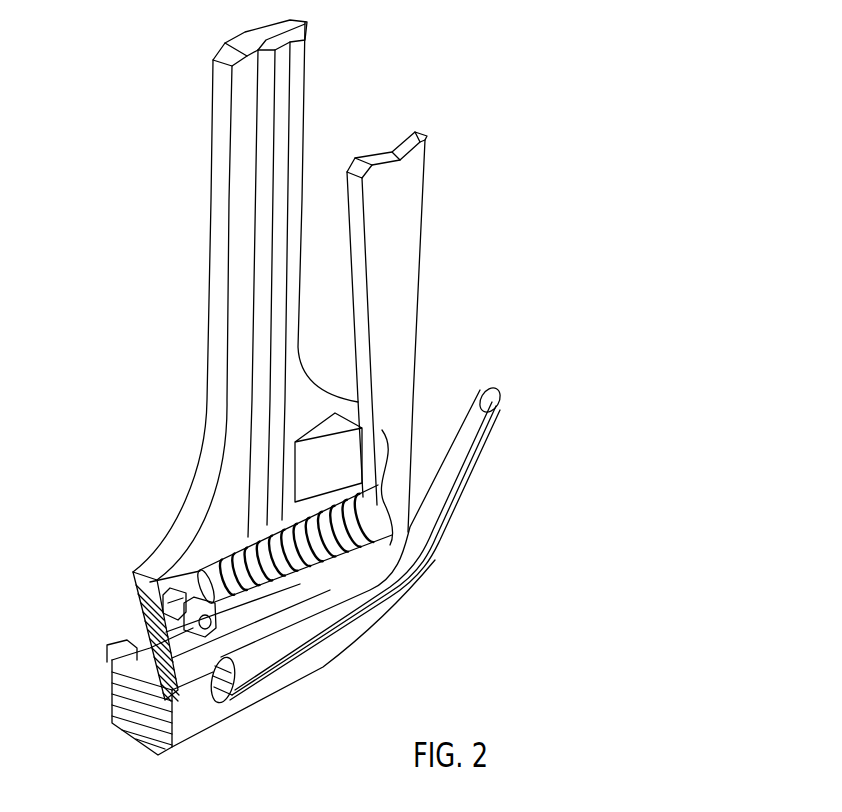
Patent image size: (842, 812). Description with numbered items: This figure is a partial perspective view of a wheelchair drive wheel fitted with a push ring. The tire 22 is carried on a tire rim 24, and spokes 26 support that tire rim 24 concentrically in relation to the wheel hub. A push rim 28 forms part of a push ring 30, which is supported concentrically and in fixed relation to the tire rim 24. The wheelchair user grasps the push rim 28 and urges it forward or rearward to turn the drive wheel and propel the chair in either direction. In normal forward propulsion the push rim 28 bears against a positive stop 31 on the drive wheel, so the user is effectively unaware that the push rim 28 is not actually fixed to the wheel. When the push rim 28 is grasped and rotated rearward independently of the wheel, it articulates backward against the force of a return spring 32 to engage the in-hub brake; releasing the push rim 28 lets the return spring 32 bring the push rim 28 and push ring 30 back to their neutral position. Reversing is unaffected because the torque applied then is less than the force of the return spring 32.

The tire 22 is at (130, 695).
The tire rim 24 is at (127, 617).
The spokes 26 is at (217, 398).
The push rim 28 is at (450, 462).
The push ring 30 is at (398, 333).
The positive stop 31 is at (340, 460).
The return spring 32 is at (305, 528).